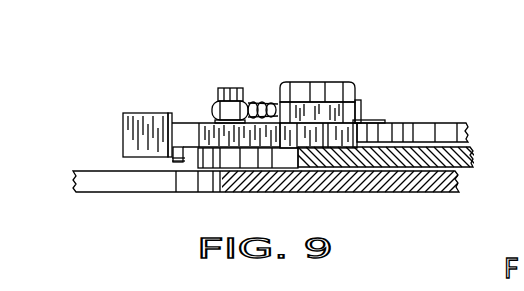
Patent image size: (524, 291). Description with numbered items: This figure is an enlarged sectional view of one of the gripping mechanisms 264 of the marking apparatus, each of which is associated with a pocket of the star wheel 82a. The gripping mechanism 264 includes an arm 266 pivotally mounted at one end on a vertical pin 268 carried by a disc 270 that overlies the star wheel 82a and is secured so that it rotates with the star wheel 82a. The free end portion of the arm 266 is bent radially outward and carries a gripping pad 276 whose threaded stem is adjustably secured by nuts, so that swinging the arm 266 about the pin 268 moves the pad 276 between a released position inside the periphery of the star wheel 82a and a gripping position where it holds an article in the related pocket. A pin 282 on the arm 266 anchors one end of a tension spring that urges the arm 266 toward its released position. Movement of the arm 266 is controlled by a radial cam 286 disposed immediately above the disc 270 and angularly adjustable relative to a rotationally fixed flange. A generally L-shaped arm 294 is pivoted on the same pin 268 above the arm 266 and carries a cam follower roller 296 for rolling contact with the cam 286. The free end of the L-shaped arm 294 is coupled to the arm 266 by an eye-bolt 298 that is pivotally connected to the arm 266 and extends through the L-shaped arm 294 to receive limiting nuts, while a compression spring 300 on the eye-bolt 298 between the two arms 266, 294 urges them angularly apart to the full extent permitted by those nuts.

The gripping mechanism 264 is at (182, 78).
The arm 266 is at (200, 132).
The vertical pin 268 is at (298, 82).
The disc 270 is at (473, 170).
The gripping pad 276 is at (137, 136).
The pin 282 is at (180, 170).
The radial cam 286 is at (452, 124).
The L-shaped arm 294 is at (362, 100).
The cam follower roller 296 is at (368, 122).
The eye-bolt 298 is at (207, 92).
The compression spring 300 is at (262, 98).
The star wheel 82a is at (318, 189).